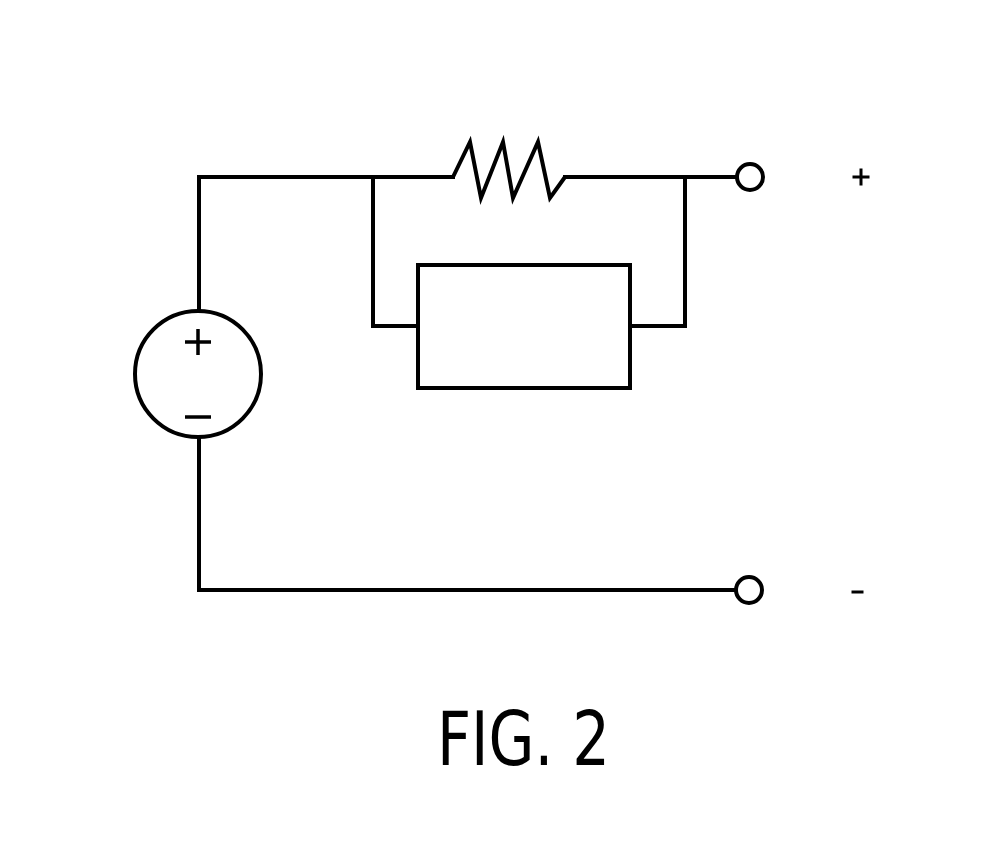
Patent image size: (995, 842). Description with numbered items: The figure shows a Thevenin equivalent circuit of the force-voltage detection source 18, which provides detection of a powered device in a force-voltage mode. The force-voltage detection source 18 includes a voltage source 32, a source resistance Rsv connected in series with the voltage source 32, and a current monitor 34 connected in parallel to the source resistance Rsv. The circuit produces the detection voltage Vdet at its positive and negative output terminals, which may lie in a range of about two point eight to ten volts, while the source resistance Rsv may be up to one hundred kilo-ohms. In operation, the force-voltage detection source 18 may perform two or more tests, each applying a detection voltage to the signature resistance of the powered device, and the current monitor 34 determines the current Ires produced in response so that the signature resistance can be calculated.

The force-voltage detection source 18 is at (288, 113).
The voltage source 32 is at (133, 375).
The current monitor 34 is at (523, 388).